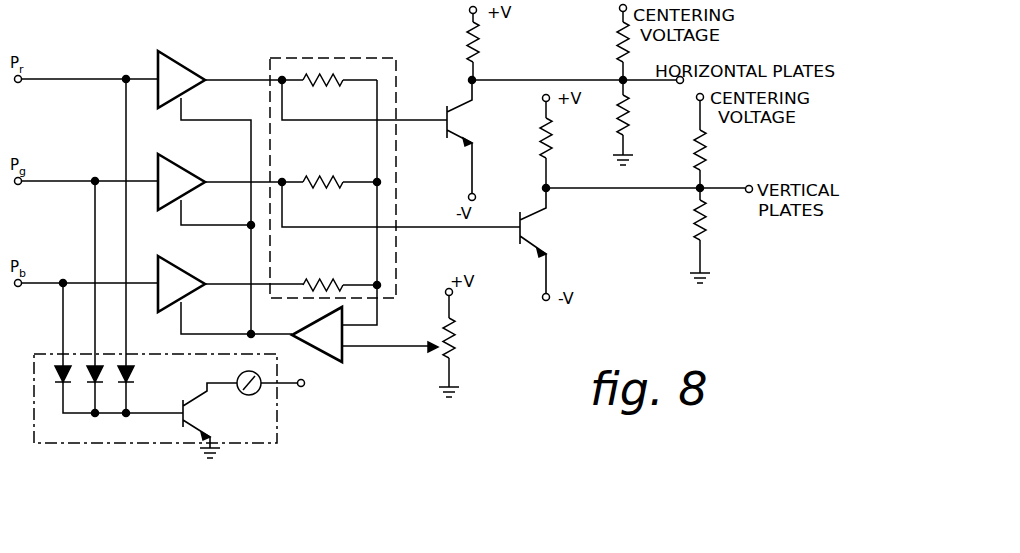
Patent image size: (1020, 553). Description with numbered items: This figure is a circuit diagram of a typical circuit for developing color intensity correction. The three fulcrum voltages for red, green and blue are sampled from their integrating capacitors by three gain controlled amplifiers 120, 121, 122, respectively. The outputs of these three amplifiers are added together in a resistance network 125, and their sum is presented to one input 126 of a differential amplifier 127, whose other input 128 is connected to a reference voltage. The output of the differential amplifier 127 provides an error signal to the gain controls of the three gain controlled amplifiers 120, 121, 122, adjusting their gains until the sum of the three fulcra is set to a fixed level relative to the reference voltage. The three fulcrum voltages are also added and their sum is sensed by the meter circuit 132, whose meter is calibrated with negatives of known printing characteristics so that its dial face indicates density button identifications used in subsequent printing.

The gain controlled amplifier 120 is at (185, 56).
The gain controlled amplifier 121 is at (183, 160).
The gain controlled amplifier 122 is at (183, 262).
The resistance network 125 is at (352, 58).
The input of differential amplifier 126 is at (342, 318).
The differential amplifier 127 is at (332, 363).
The other input of differential amplifier 128 is at (345, 352).
The meter circuit 132 is at (277, 443).